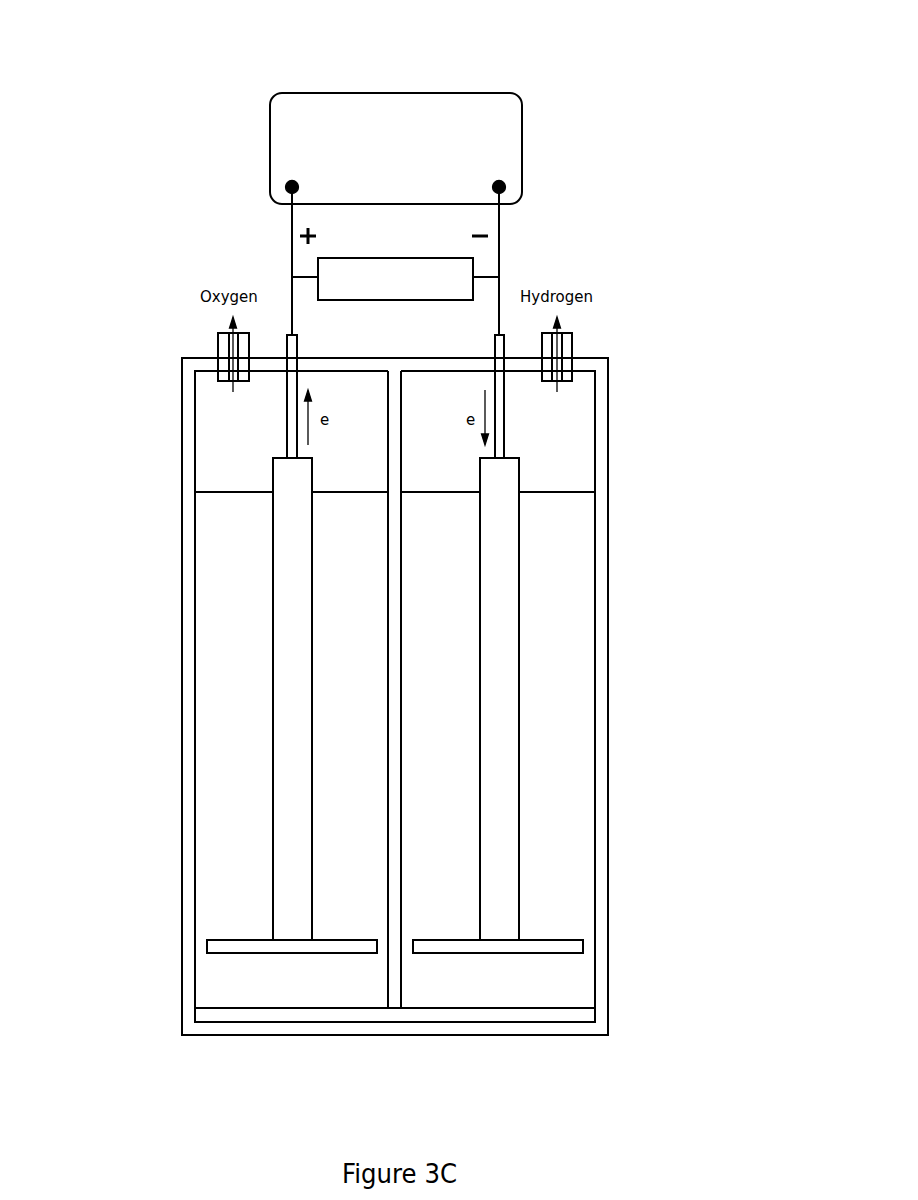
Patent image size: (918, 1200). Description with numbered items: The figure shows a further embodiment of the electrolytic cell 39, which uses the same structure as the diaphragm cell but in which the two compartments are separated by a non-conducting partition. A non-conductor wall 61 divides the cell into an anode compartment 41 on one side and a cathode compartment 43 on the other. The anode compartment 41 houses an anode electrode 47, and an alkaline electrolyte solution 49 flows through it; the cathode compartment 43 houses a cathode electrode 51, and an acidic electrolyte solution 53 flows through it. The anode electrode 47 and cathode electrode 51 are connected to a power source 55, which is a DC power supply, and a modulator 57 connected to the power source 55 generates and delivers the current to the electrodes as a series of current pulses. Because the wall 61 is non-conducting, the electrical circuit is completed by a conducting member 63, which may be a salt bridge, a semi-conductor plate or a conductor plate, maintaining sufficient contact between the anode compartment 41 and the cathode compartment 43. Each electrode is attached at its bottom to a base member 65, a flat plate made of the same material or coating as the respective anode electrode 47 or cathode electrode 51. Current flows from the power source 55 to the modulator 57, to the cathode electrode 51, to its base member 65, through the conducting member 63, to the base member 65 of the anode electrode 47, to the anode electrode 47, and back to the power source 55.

The electrolytic cell 39 is at (698, 322).
The anode compartment 41 is at (181, 670).
The cathode compartment 43 is at (609, 684).
The anode electrode 47 is at (290, 568).
The alkaline electrolyte solution 49 is at (231, 776).
The cathode electrode 51 is at (504, 572).
The acidic electrolyte solution 53 is at (560, 790).
The power source 55 is at (387, 105).
The modulator 57 is at (445, 276).
The non-conductor wall 61 is at (395, 963).
The conducting member 63 is at (453, 1015).
The base member 65 is at (228, 942).